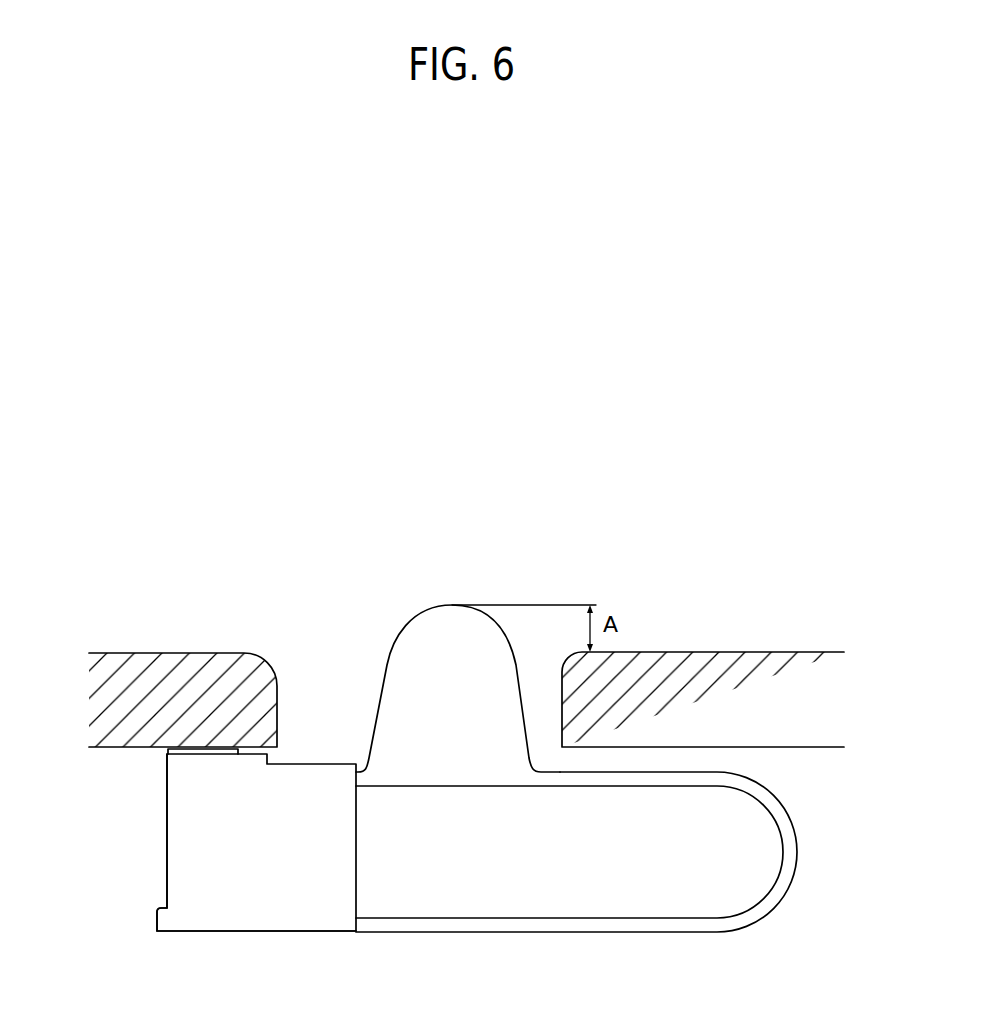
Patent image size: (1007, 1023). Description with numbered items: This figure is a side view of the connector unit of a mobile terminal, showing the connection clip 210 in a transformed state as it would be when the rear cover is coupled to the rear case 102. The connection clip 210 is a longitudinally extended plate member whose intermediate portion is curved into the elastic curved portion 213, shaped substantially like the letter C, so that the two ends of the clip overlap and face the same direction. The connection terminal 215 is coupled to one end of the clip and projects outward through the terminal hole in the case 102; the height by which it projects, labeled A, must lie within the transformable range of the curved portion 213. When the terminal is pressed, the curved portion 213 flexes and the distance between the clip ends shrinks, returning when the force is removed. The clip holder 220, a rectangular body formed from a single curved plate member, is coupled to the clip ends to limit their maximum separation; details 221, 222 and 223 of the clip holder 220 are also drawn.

The case 102 is at (138, 658).
The connection clip 210 is at (588, 697).
The curved portion 213 is at (788, 822).
The connection terminal 215 is at (413, 633).
The clip holder 220 is at (205, 782).
The body 221 is at (277, 931).
The adhesive layer 222 is at (223, 752).
The stepped portion 223 is at (218, 902).